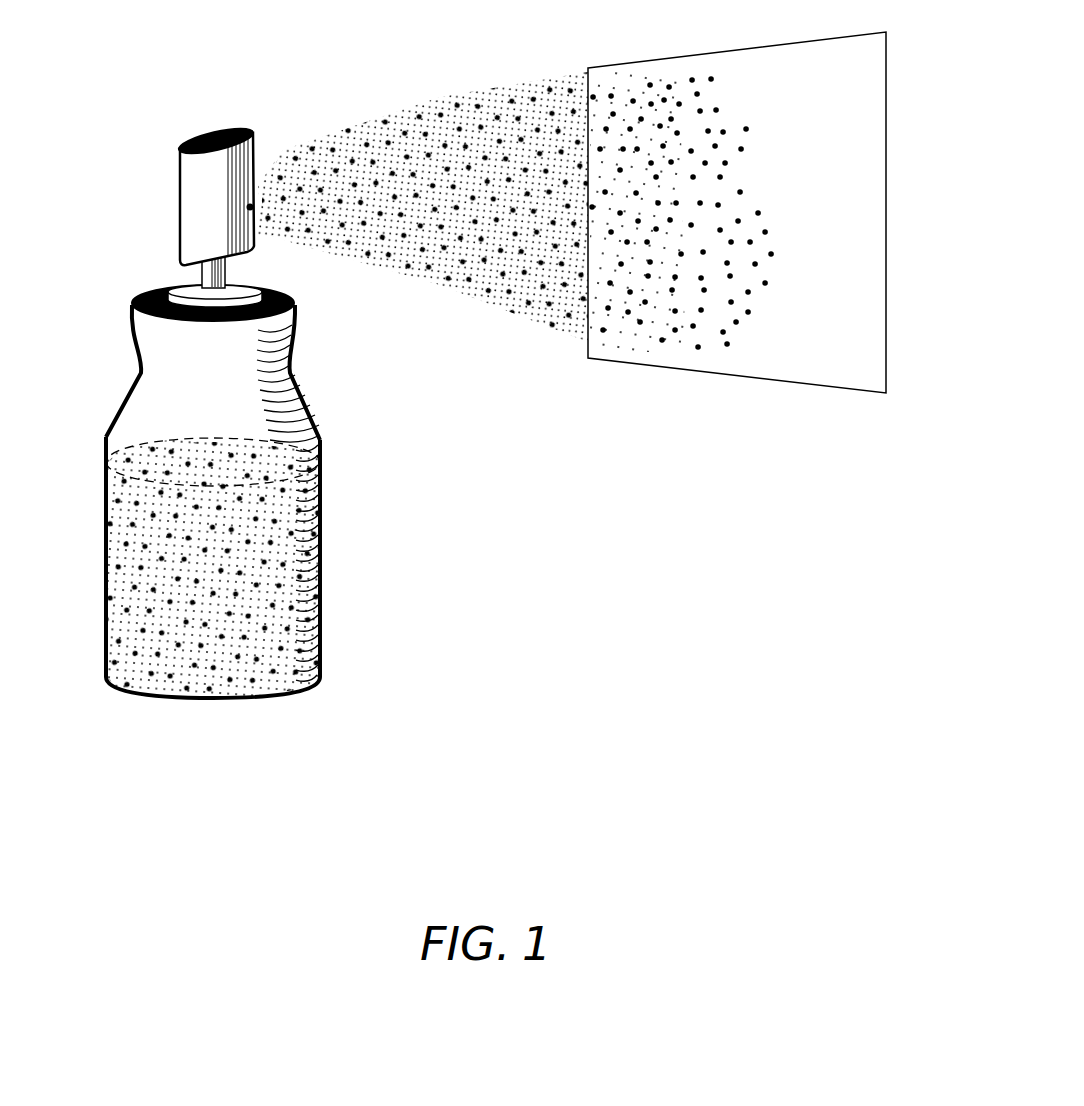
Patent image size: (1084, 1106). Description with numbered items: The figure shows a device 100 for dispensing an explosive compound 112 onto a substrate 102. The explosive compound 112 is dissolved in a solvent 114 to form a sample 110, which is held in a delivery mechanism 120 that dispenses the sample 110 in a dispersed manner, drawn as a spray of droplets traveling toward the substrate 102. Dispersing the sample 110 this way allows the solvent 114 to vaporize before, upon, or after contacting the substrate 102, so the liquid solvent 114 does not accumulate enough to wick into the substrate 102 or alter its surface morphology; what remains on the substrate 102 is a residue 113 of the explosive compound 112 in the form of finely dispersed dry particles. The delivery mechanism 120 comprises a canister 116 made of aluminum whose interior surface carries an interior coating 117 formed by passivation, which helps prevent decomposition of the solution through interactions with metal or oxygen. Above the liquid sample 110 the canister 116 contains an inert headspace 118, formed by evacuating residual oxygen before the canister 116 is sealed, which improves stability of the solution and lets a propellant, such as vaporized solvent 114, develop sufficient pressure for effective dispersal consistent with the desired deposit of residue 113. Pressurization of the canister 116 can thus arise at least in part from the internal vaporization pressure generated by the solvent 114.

The device 100 is at (104, 63).
The substrate 102 is at (887, 90).
The sample 110 is at (360, 489).
The explosive compound 112 is at (432, 128).
The residue 113 is at (757, 170).
The solvent 114 is at (487, 83).
The canister 116 is at (133, 295).
The interior coating 117 is at (137, 405).
The inert headspace 118 is at (330, 298).
The delivery mechanism 120 is at (246, 158).